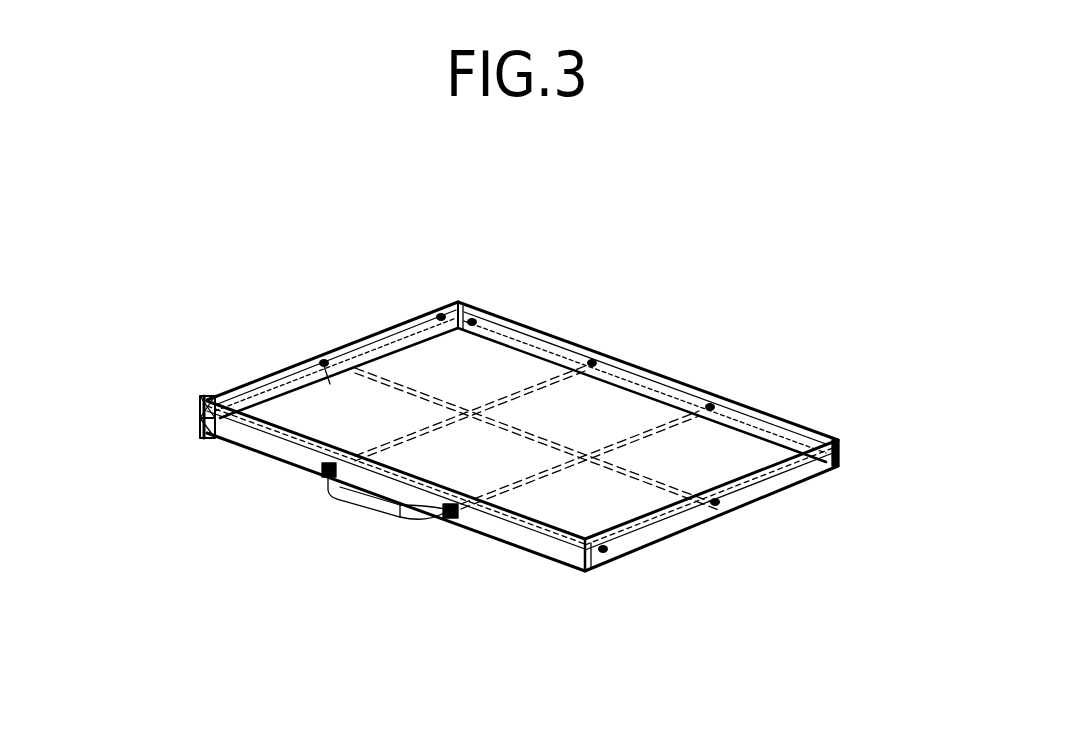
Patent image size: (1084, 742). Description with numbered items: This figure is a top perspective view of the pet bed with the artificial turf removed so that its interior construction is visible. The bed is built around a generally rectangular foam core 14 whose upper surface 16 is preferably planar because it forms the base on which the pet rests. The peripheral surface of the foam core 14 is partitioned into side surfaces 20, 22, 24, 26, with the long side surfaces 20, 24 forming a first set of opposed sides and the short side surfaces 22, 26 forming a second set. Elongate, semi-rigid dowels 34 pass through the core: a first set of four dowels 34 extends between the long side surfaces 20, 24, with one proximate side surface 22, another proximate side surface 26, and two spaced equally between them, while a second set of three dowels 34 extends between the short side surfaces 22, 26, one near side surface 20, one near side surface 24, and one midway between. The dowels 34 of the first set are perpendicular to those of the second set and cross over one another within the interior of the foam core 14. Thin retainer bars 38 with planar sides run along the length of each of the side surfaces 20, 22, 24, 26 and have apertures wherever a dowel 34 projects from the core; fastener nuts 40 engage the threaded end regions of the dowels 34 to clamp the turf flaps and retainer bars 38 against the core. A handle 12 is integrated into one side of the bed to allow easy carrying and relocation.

The handle 12 is at (383, 505).
The foam core 14 is at (457, 362).
The upper surface 16 is at (492, 378).
The side surface 20 is at (200, 440).
The side surface 22 is at (200, 398).
The side surface 24 is at (749, 397).
The side surface 26 is at (742, 493).
The dowels 34 is at (478, 398).
The retainer bars 38 is at (288, 452).
The fastener nuts 40 is at (608, 561).